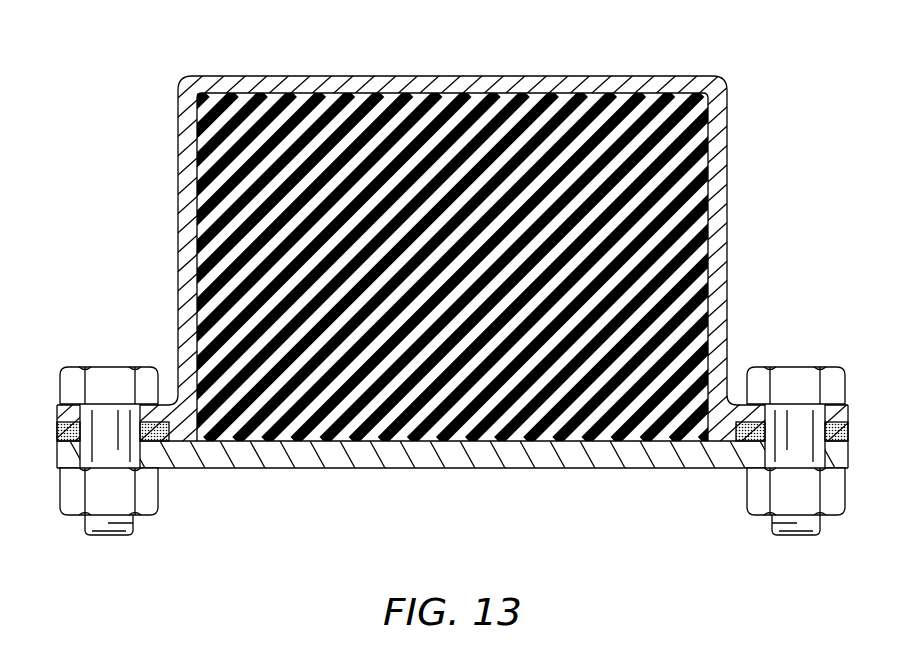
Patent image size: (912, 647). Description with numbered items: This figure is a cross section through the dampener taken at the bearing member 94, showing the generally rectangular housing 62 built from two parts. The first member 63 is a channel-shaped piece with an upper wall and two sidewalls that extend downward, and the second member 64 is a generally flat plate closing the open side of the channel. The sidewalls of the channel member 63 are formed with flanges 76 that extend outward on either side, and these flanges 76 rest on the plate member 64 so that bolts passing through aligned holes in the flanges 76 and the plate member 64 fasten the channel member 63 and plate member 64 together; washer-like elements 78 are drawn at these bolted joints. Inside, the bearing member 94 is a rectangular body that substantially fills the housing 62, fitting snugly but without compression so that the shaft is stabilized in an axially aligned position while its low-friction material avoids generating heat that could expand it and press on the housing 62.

The housing 62 is at (730, 258).
The first member 63 is at (506, 82).
The second member 64 is at (613, 469).
The flanges 76 is at (171, 402).
The insulating washer 78 is at (57, 432).
The bearing member 94 is at (393, 133).